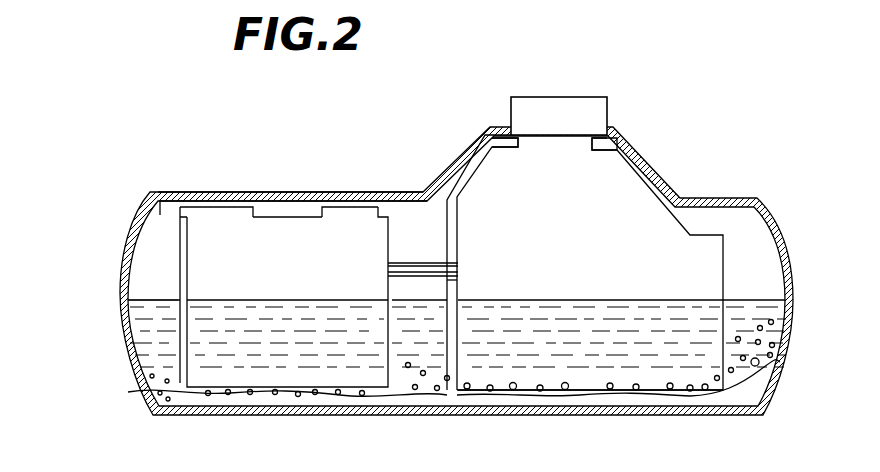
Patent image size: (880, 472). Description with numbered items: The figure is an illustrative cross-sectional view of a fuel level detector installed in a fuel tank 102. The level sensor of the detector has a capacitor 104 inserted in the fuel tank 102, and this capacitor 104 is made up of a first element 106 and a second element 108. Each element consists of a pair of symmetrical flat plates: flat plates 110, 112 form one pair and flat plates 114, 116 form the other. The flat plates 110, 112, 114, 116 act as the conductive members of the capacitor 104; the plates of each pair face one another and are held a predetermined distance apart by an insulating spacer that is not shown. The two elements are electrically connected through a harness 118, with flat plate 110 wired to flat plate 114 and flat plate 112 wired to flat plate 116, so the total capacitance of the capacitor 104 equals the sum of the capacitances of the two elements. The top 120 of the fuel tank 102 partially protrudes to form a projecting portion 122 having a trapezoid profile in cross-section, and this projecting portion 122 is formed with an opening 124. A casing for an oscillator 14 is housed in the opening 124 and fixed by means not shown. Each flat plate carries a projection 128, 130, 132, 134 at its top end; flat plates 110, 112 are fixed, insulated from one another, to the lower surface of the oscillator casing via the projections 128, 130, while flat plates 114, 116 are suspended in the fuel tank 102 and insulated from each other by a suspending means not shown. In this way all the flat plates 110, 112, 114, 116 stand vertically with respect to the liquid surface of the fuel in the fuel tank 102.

The oscillator 14 is at (568, 97).
The fuel tank 102 is at (782, 237).
The capacitor 104 is at (436, 343).
The first element 106 is at (441, 290).
The second element 108 is at (166, 247).
The flat plate 110 is at (480, 365).
The flat plate 112 is at (445, 372).
The flat plate 114 is at (197, 288).
The flat plate 116 is at (167, 273).
The harness 118 is at (410, 262).
The top of the fuel tank 120 is at (198, 190).
The projecting portion 122 is at (455, 128).
The opening 124 is at (508, 122).
The projection 128 is at (565, 138).
The projection 130 is at (517, 148).
The projection 132 is at (300, 210).
The projection 134 is at (250, 206).